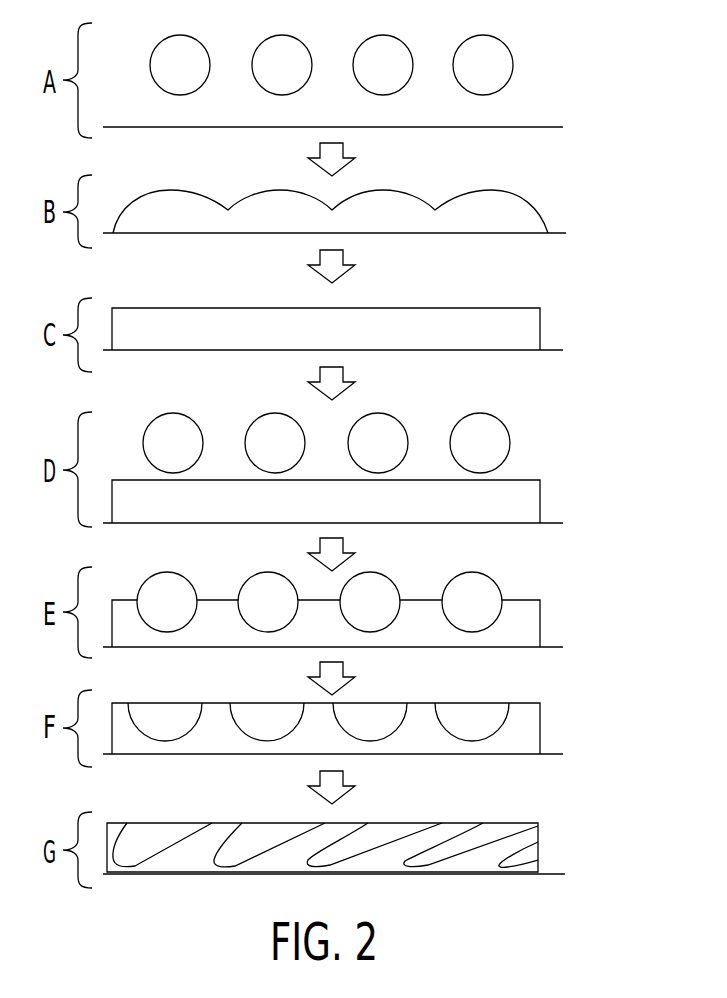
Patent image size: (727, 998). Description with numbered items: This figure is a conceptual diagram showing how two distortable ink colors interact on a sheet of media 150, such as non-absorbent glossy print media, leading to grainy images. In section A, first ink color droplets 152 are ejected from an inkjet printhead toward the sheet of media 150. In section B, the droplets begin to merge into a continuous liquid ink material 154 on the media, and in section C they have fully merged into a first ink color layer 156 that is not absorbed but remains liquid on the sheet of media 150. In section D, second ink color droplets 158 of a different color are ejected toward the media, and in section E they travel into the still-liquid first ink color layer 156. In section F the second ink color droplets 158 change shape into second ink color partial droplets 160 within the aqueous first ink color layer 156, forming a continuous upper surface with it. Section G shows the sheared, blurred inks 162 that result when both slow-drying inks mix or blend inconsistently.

The sheet of media 150 is at (513, 127).
The first ink color droplets 152 is at (510, 42).
The continuous liquid ink material 154 is at (508, 195).
The first ink color layer 156 is at (518, 308).
The second ink color droplets 158 is at (483, 413).
The second ink color partial droplets 160 is at (495, 703).
The sheared elongated cavities 162 is at (503, 823).